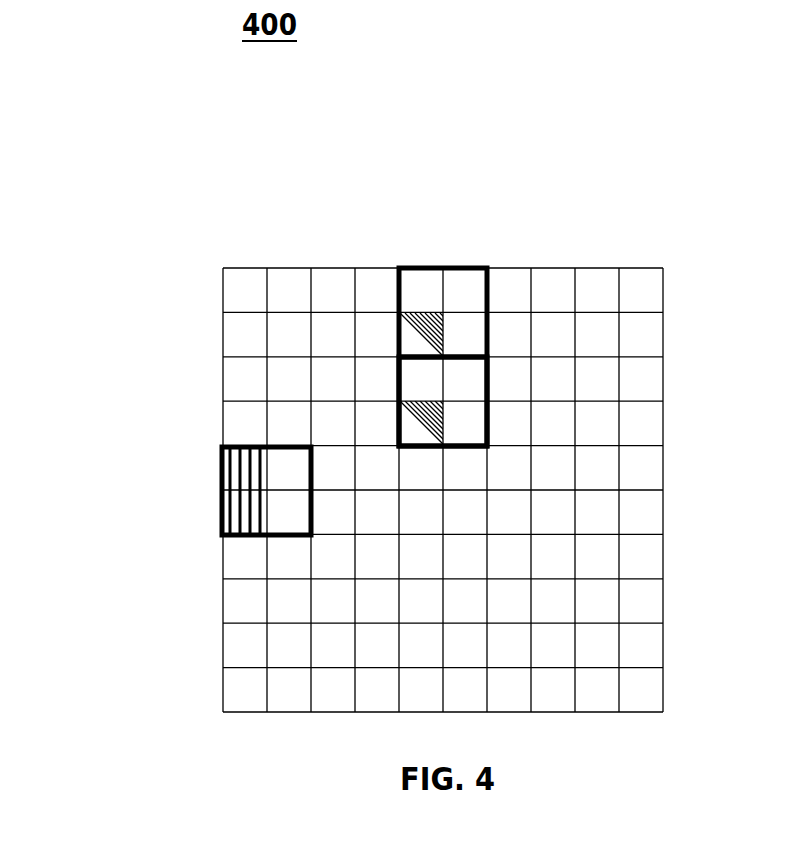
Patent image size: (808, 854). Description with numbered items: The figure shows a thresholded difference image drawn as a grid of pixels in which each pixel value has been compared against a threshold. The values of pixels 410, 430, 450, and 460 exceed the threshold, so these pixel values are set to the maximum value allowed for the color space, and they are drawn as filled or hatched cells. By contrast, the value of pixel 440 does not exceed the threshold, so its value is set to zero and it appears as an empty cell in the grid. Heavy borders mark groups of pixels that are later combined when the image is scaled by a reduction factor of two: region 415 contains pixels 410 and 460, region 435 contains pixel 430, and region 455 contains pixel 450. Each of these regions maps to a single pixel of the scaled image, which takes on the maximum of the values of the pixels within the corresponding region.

The pixel 410 is at (252, 468).
The region 415 is at (297, 538).
The pixel 430 is at (420, 343).
The region 435 is at (426, 268).
The pixel 440 is at (587, 653).
The pixel 450 is at (415, 425).
The region 455 is at (478, 449).
The pixel 460 is at (243, 517).